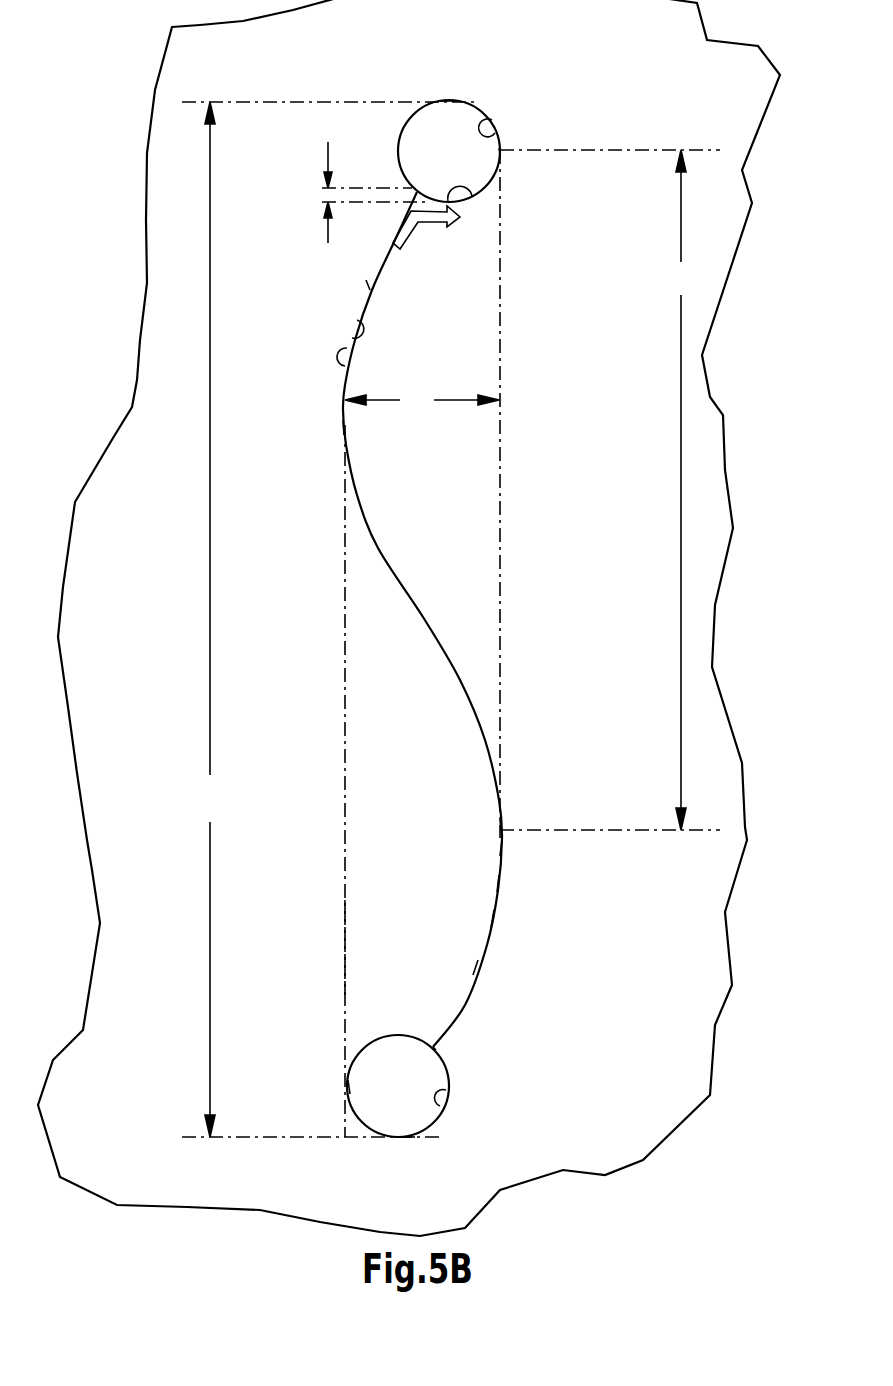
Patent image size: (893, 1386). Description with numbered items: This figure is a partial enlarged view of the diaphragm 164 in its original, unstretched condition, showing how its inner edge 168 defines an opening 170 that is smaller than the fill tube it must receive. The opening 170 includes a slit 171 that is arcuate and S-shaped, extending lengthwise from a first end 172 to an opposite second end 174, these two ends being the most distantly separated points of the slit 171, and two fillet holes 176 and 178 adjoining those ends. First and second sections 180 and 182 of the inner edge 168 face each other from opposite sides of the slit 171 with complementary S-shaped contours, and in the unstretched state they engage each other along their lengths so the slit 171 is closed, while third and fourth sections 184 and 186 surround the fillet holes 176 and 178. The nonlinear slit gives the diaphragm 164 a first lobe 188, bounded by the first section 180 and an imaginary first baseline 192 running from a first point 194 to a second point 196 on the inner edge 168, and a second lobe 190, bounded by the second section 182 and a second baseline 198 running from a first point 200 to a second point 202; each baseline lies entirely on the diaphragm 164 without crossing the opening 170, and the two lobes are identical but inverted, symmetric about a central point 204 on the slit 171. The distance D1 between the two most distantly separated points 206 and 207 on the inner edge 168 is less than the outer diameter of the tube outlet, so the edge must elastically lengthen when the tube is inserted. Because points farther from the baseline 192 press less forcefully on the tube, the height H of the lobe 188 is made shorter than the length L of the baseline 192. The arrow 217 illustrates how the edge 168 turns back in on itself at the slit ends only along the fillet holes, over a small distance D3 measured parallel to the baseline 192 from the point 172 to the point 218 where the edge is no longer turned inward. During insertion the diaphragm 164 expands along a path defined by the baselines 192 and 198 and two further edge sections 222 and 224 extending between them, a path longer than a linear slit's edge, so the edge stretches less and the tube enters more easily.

The diaphragm 164 is at (700, 458).
The inner edge 168 is at (500, 848).
The opening 170 is at (496, 882).
The slit 171 is at (491, 918).
The first end of the slit 172 is at (404, 186).
The second end of the slit 174 is at (435, 1047).
The fillet hole 176 is at (441, 140).
The fillet hole 178 is at (392, 1103).
The first section of the inner edge 180 is at (352, 355).
The second section of the inner edge 182 is at (348, 323).
The third section of the inner edge 184 is at (495, 131).
The fourth section of the inner edge 186 is at (440, 1106).
The first lobe 188 is at (460, 310).
The second lobe 190 is at (375, 935).
The first baseline 192 is at (500, 345).
The first point 194 is at (500, 152).
The second point 196 is at (503, 829).
The second baseline 198 is at (345, 683).
The first point 200 is at (350, 1087).
The second point 202 is at (344, 426).
The central point 204 is at (423, 617).
The most distantly separated point 206 is at (462, 101).
The most distantly separated point 207 is at (403, 1137).
The arrow 217 is at (422, 228).
The point 218 is at (475, 195).
The section of the inner edge 222 is at (368, 286).
The section of the inner edge 224 is at (476, 968).
The distance D1 is at (212, 619).
The distance D3 is at (328, 177).
The length of the baseline L is at (679, 490).
The height of the lobe H is at (422, 401).